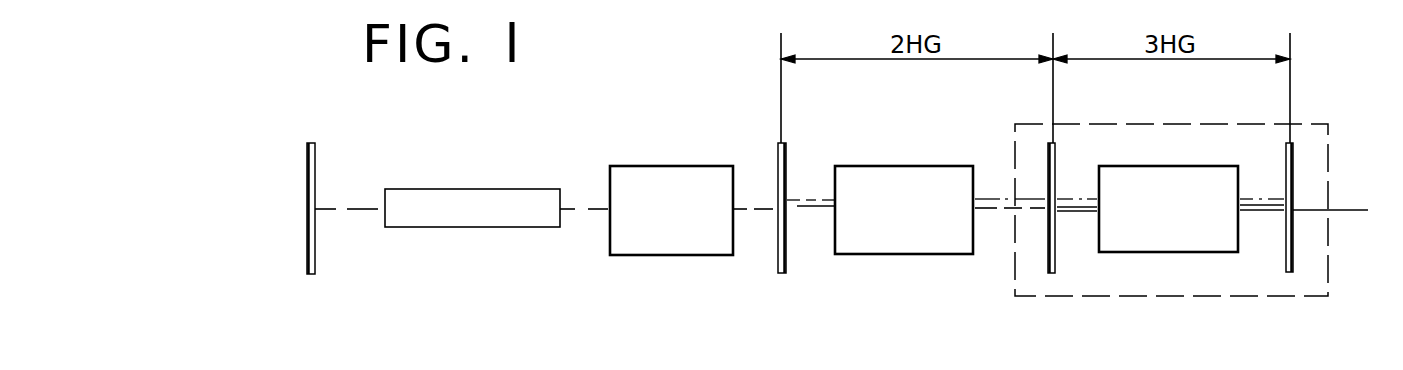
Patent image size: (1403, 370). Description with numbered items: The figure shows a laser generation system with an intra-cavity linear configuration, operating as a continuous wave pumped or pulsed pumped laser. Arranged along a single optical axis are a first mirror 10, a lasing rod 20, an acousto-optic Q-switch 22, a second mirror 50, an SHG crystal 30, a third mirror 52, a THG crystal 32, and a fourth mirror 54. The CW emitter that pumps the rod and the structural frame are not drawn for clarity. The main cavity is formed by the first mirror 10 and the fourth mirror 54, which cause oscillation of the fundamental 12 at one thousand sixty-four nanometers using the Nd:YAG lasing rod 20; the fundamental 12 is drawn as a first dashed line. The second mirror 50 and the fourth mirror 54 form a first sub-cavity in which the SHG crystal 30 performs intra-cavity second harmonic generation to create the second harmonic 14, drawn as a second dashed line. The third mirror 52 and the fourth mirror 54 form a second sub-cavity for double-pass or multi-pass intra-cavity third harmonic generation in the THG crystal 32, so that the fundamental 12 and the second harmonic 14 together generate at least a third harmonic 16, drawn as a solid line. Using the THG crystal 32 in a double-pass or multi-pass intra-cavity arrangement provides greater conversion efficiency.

The first mirror 10 is at (307, 162).
The fundamental 12 is at (572, 210).
The second harmonic 14 is at (791, 197).
The third harmonic 16 is at (1268, 215).
The lasing rod 20 is at (437, 200).
The acousto-optic Q-switch 22 is at (620, 171).
The SHG crystal 30 is at (880, 172).
The THG crystal 32 is at (1147, 173).
The second mirror 50 is at (778, 155).
The third mirror 52 is at (1057, 250).
The fourth mirror 54 is at (1292, 245).